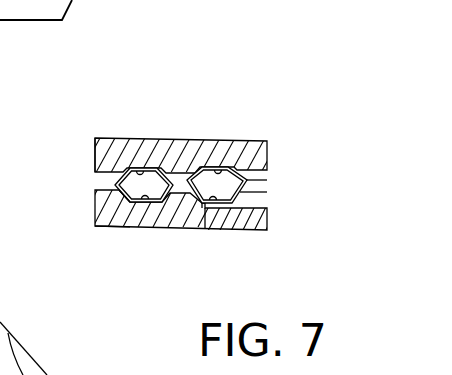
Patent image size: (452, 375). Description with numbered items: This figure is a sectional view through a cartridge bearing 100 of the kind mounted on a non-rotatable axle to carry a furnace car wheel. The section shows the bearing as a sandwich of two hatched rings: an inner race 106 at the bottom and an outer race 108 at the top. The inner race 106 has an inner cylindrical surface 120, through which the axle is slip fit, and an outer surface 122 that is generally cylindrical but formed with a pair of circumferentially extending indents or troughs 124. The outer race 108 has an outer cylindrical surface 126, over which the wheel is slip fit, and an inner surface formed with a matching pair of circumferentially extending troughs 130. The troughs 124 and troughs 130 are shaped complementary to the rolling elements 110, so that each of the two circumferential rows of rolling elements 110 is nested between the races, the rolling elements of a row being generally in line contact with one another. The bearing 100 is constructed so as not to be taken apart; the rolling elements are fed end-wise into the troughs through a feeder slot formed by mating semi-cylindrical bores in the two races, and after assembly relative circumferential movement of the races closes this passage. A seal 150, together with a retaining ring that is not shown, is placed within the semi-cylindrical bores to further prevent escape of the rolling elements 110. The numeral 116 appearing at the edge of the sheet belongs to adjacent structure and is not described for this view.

The cartridge bearing 100 is at (210, 120).
The inner race 106 is at (268, 228).
The outer race 108 is at (267, 148).
The rolling elements 110 is at (143, 227).
The adjacent structure 116 is at (40, 373).
The inner cylindrical surface 120 is at (118, 227).
The outer surface 122 is at (183, 146).
The troughs 124 is at (119, 189).
The outer cylindrical surface 126 is at (108, 138).
The troughs 130 is at (137, 138).
The seal 150 is at (267, 180).